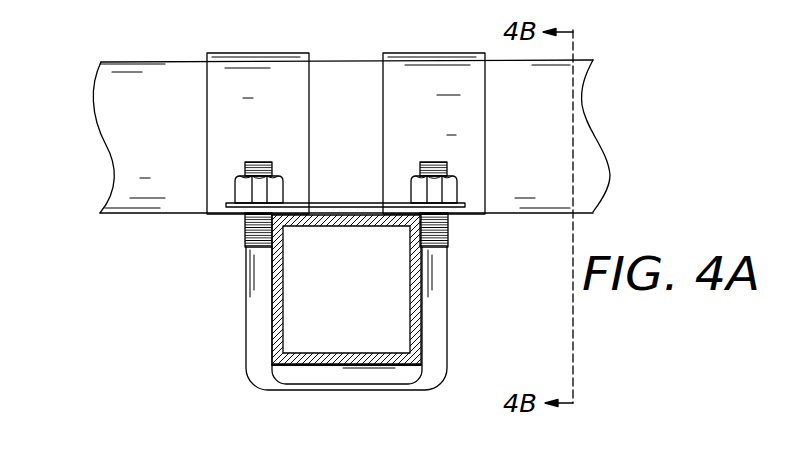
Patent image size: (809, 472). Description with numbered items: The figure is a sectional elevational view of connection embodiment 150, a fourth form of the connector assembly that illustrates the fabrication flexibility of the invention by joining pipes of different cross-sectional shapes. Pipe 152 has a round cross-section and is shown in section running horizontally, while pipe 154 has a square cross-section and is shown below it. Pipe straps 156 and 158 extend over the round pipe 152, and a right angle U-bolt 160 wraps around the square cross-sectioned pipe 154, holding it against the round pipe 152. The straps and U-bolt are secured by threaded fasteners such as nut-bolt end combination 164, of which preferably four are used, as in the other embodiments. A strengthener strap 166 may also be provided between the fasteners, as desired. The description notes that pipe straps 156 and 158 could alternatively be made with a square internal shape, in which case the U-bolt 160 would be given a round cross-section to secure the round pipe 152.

The connection embodiment 150 is at (127, 295).
The pipe 152 is at (505, 199).
The pipe 154 is at (422, 338).
The pipe strap 156 is at (447, 75).
The pipe strap 158 is at (237, 73).
The U-bolt 160 is at (302, 367).
The nut-bolt end combination 164 is at (243, 190).
The strengthener strap 166 is at (345, 203).